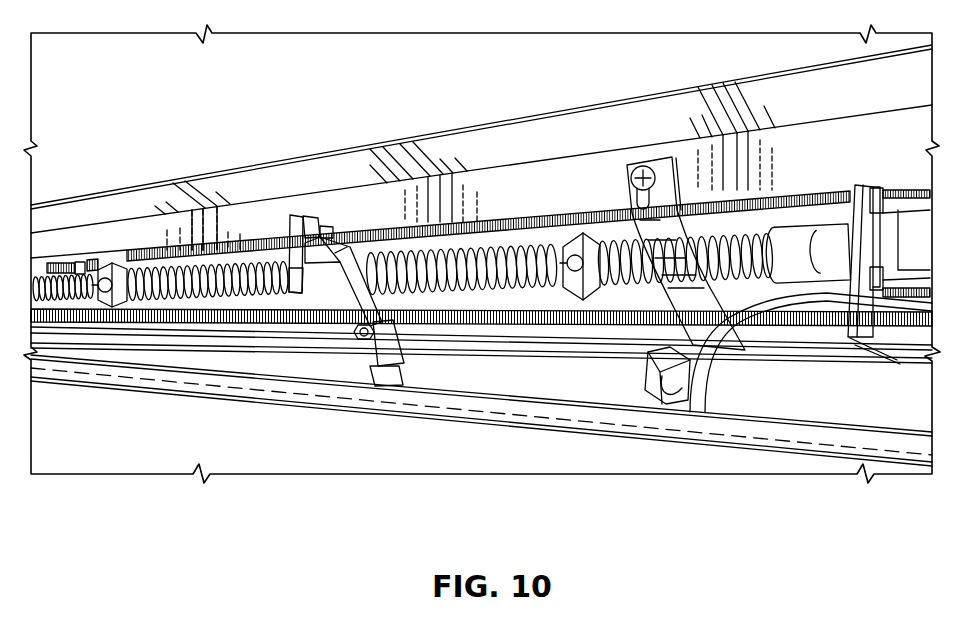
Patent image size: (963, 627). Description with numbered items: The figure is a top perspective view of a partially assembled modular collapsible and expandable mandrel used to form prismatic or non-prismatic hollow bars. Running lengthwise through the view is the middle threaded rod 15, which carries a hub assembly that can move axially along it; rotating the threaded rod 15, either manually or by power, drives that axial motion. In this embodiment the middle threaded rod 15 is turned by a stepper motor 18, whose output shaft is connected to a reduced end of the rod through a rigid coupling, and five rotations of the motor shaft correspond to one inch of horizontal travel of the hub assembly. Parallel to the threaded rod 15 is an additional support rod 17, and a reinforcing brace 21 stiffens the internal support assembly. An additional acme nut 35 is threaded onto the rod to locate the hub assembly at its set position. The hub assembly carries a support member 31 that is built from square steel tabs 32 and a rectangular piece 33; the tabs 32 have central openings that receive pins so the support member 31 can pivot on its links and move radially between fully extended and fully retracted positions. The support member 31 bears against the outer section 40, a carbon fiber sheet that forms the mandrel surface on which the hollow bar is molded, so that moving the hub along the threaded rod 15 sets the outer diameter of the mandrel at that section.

The middle threaded rod 15 is at (528, 255).
The support rod 17 is at (612, 322).
The stepper motor 18 is at (922, 252).
The reinforcing brace 21 is at (650, 163).
The support member 31 is at (326, 220).
The tab 32 is at (291, 215).
The rectangular piece 33 is at (290, 293).
The acme nut 35 is at (113, 252).
The outer section 40 is at (376, 152).